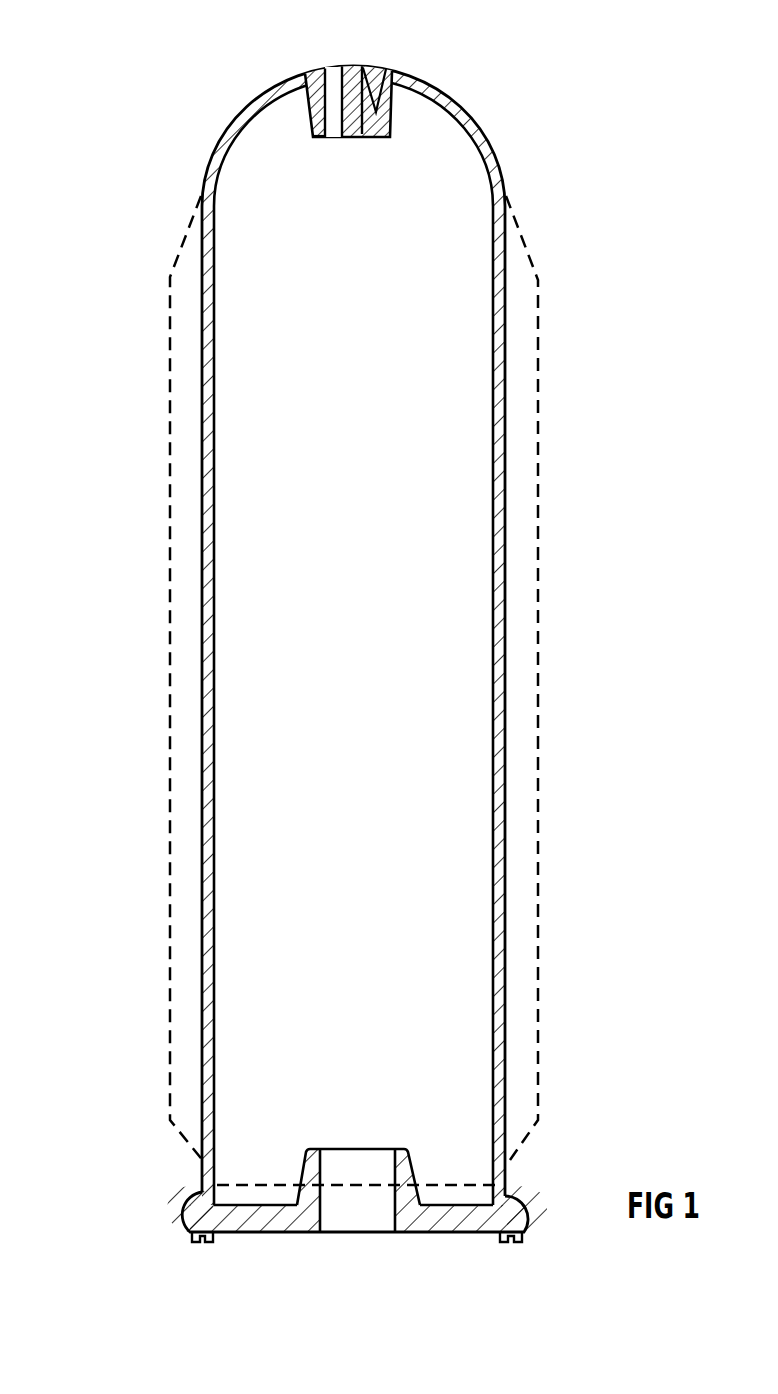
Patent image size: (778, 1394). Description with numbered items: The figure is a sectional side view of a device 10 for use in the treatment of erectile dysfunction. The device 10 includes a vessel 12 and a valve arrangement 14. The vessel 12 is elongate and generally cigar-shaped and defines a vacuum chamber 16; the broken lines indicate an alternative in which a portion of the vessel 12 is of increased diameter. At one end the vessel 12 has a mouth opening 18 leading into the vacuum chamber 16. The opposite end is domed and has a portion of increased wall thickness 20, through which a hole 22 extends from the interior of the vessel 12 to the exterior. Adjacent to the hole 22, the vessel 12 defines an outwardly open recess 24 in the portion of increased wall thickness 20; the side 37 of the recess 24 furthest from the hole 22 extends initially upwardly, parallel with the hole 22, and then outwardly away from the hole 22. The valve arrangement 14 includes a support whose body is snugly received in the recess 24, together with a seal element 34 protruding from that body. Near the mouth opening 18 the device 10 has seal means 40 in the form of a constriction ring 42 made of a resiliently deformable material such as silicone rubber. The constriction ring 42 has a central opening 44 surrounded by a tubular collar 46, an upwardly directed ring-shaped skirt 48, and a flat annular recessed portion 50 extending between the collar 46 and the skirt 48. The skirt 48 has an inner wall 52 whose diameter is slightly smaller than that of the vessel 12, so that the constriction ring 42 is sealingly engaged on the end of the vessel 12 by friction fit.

The device 10 is at (152, 120).
The vessel 12 is at (620, 458).
The valve arrangement 14 is at (402, 60).
The vacuum chamber 16 is at (430, 682).
The mouth opening 18 is at (258, 1194).
The portion of increased wall thickness 20 is at (416, 105).
The hole 22 is at (328, 138).
The recess 24 is at (377, 66).
The seal element 34 is at (336, 68).
The side of the recess 37 is at (365, 90).
The seal means 40 is at (329, 1203).
The constriction ring 42 is at (484, 1246).
The central opening 44 is at (350, 1233).
The collar 46 is at (406, 1168).
The skirt 48 is at (547, 1212).
The recessed portion 50 is at (450, 1220).
The wall 52 is at (501, 1191).